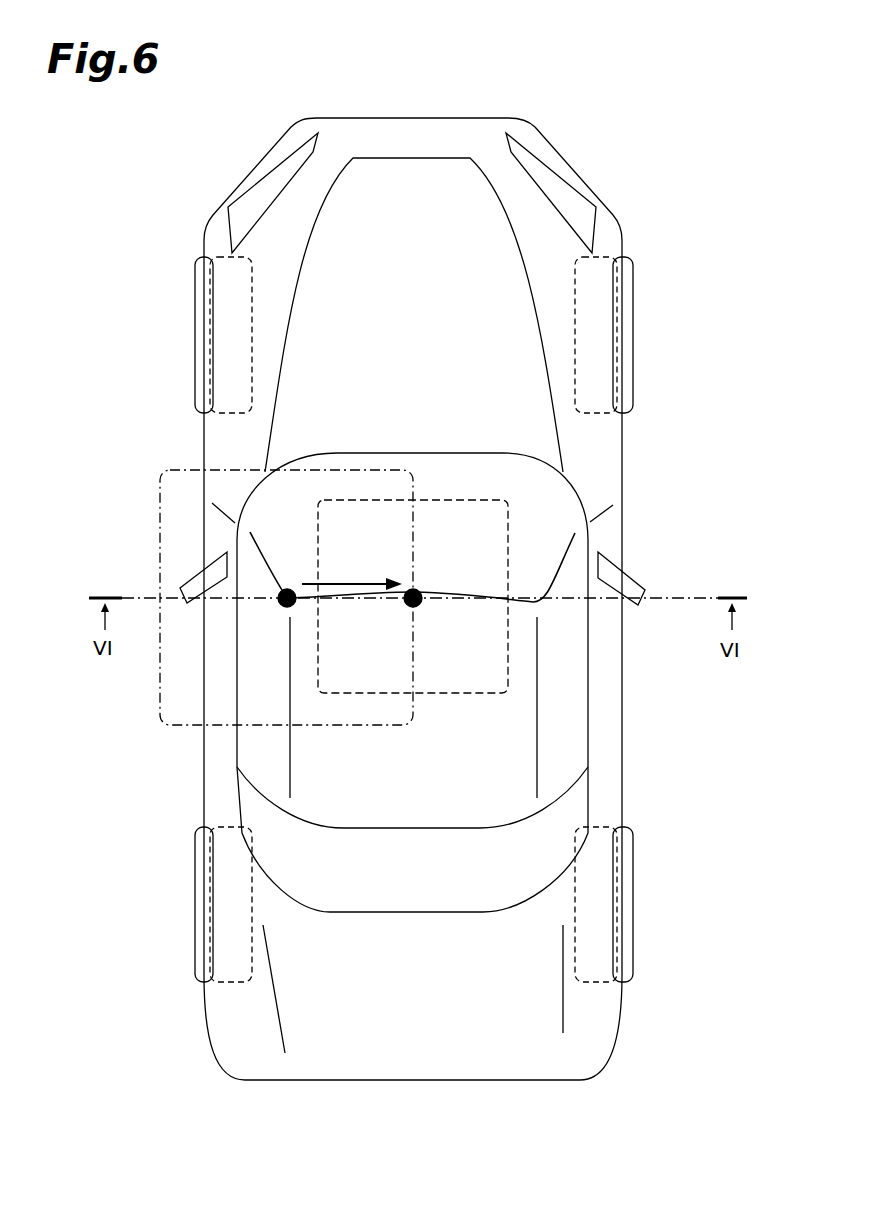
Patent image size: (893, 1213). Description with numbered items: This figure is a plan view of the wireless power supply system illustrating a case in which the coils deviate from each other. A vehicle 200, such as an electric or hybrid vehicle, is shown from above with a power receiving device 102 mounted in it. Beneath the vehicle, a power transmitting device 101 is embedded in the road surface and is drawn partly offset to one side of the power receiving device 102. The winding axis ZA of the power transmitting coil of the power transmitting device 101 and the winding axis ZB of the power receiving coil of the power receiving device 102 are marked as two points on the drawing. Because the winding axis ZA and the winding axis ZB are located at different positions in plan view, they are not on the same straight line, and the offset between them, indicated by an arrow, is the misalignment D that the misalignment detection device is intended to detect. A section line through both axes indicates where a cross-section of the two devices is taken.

The vehicle 200 is at (204, 436).
The power transmitting device 101 is at (160, 492).
The power receiving device 102 is at (510, 650).
The misalignment D is at (313, 583).
The winding axis of the power transmitting coil ZA is at (282, 606).
The winding axis of the power receiving coil ZB is at (419, 590).